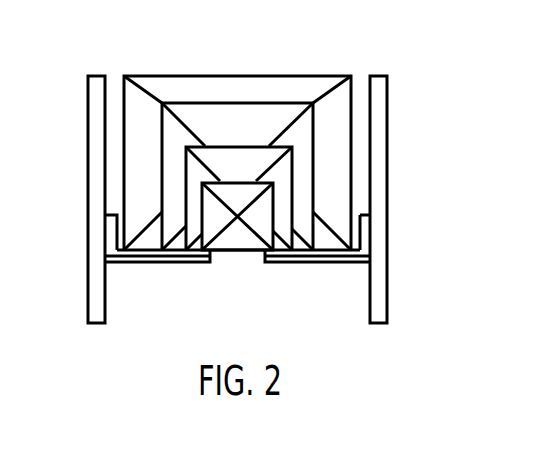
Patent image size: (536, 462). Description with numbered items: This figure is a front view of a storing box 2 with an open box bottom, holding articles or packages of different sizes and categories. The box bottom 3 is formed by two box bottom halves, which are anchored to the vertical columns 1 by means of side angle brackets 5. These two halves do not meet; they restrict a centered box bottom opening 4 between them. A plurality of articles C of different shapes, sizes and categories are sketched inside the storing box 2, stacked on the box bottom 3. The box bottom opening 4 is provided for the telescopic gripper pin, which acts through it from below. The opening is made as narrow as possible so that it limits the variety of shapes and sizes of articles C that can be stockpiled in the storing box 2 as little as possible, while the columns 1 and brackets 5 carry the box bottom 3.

The vertical columns 1 is at (382, 117).
The storing box 2 is at (358, 82).
The box bottom 3 is at (183, 258).
The box bottom opening 4 is at (240, 253).
The side angle brackets 5 is at (107, 213).
The articles C is at (233, 183).